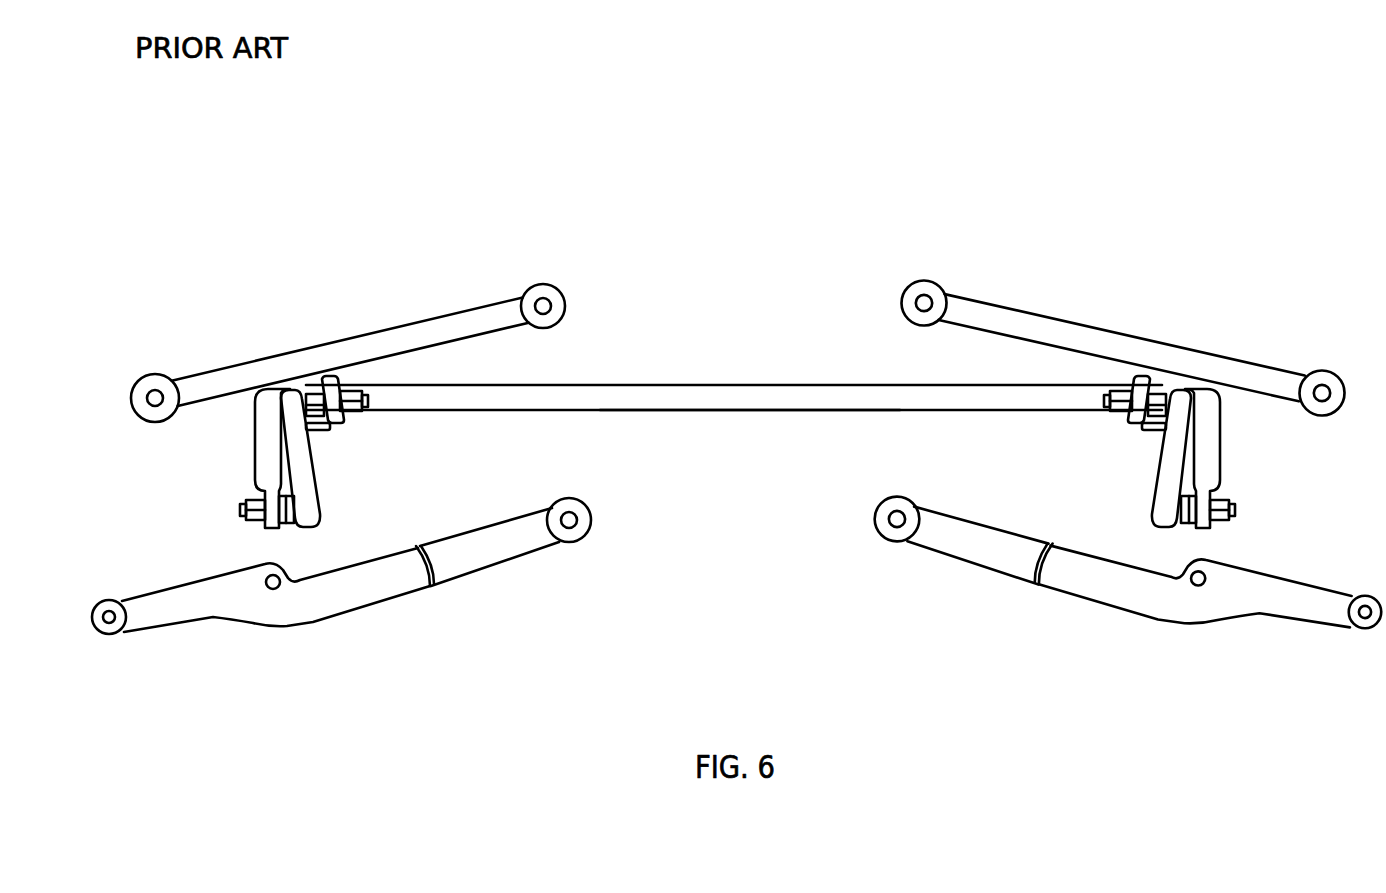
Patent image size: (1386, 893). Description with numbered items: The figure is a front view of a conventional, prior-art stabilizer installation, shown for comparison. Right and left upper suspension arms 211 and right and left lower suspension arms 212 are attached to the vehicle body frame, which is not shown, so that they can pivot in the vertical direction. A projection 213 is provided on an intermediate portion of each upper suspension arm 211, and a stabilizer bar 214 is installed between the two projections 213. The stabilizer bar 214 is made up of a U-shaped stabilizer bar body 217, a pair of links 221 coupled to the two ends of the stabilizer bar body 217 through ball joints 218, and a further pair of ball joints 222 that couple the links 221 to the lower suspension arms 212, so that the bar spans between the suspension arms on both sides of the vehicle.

The upper suspension arm 211 is at (437, 315).
The lower suspension arm 212 is at (378, 606).
The projection 213 is at (308, 424).
The stabilizer bar 214 is at (721, 384).
The stabilizer bar body 217 is at (748, 411).
The ball joint 218 is at (278, 530).
The link 221 is at (312, 462).
The ball joint 222 is at (310, 430).